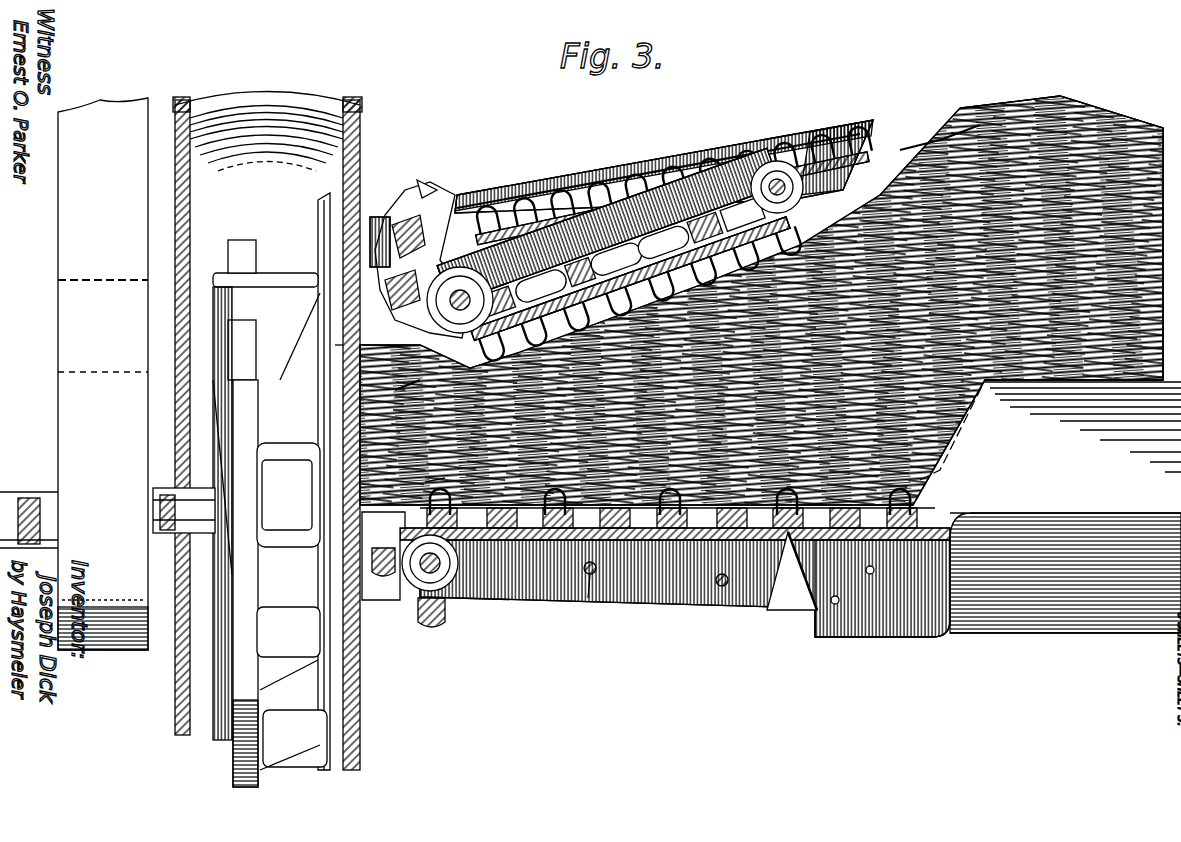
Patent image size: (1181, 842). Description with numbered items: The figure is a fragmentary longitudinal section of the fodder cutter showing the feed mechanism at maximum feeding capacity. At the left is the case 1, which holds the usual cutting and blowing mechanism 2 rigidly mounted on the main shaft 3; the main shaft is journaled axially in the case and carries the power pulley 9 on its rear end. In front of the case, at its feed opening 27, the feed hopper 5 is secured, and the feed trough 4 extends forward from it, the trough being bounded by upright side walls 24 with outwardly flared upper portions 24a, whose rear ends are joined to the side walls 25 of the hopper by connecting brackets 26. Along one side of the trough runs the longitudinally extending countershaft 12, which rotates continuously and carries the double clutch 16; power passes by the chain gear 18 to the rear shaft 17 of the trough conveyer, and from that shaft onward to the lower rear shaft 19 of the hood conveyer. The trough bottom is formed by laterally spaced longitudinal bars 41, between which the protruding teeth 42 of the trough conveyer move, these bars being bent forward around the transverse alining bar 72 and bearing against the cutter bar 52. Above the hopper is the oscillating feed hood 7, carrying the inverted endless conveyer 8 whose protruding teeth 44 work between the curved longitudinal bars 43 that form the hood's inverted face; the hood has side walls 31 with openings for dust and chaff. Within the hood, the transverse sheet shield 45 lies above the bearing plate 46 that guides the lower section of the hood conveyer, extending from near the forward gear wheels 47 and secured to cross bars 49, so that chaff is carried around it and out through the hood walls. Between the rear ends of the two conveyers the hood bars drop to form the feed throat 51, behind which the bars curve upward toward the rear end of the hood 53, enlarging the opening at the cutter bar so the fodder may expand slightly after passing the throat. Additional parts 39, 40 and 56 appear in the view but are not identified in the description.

The case 1 is at (360, 152).
The cutting and blowing mechanism 2 is at (290, 255).
The main shaft 3 is at (50, 498).
The feed trough 4 is at (880, 640).
The feed hopper 5 is at (935, 472).
The oscillating feed hood 7 is at (792, 168).
The inverted endless conveyer 8 is at (630, 168).
The power pulley 9 is at (148, 585).
The countershaft 12 is at (948, 524).
The double clutch 16 is at (588, 600).
The rear shaft 17 is at (448, 575).
The chain gear 18 is at (535, 598).
The lower rear shaft 19 is at (422, 260).
The upright side walls 24 is at (1054, 628).
The outwardly flared upper portions 24a is at (1080, 395).
The side walls of the feed hopper 25 is at (538, 287).
The connecting brackets 26 is at (790, 595).
The feed opening 27 is at (332, 335).
The side walls of the hood 31 is at (714, 142).
The bracket 39 is at (420, 200).
The shaft knob 40 is at (385, 222).
The longitudinal bars 41 is at (677, 509).
The protruding teeth 42 is at (437, 470).
The longitudinal bars 43 is at (940, 148).
The protruding teeth 44 is at (540, 176).
The transverse sheet shield 45 is at (608, 225).
The bearing plate 46 is at (630, 279).
The forward gear wheels 47 is at (800, 205).
The cross bars 49 is at (700, 236).
The feed throat 51 is at (761, 300).
The cutter bar 52 is at (383, 556).
The rear end of the hood 53 is at (408, 375).
The chain link 56 is at (663, 242).
The transverse alining bar 72 is at (288, 495).